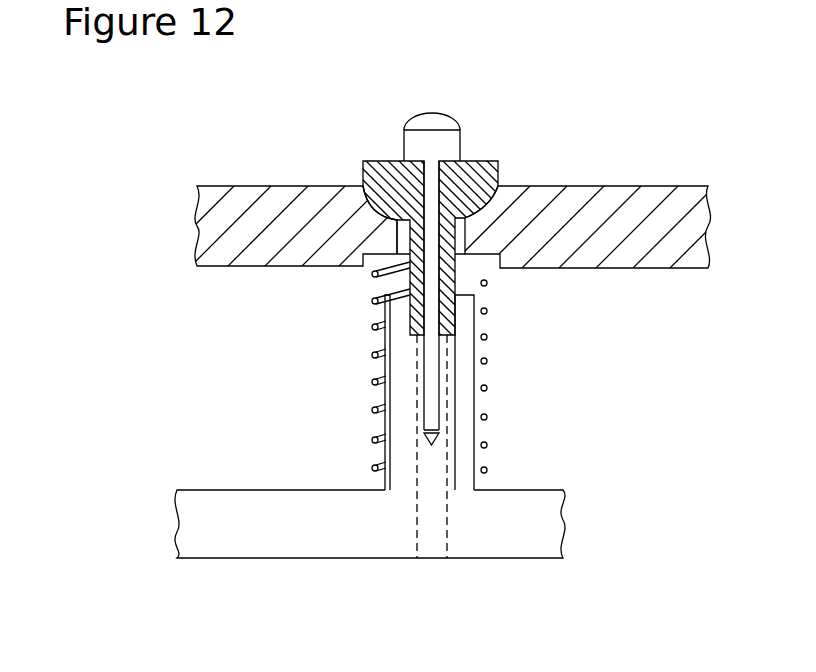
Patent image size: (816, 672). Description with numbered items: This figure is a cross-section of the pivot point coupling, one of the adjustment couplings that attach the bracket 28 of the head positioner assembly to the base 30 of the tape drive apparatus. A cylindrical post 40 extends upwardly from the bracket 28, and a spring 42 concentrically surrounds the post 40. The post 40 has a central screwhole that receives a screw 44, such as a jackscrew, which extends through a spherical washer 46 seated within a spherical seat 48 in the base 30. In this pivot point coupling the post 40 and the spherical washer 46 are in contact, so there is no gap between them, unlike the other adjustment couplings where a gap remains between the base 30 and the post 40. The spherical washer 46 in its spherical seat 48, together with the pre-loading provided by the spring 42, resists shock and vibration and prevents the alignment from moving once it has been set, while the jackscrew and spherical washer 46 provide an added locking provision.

The bracket 28 is at (541, 560).
The base 30 is at (657, 268).
The cylindrical post 40 is at (475, 368).
The spring 42 is at (372, 468).
The screw 44 is at (447, 116).
The spherical washer 46 is at (500, 164).
The spherical seat 48 is at (362, 186).